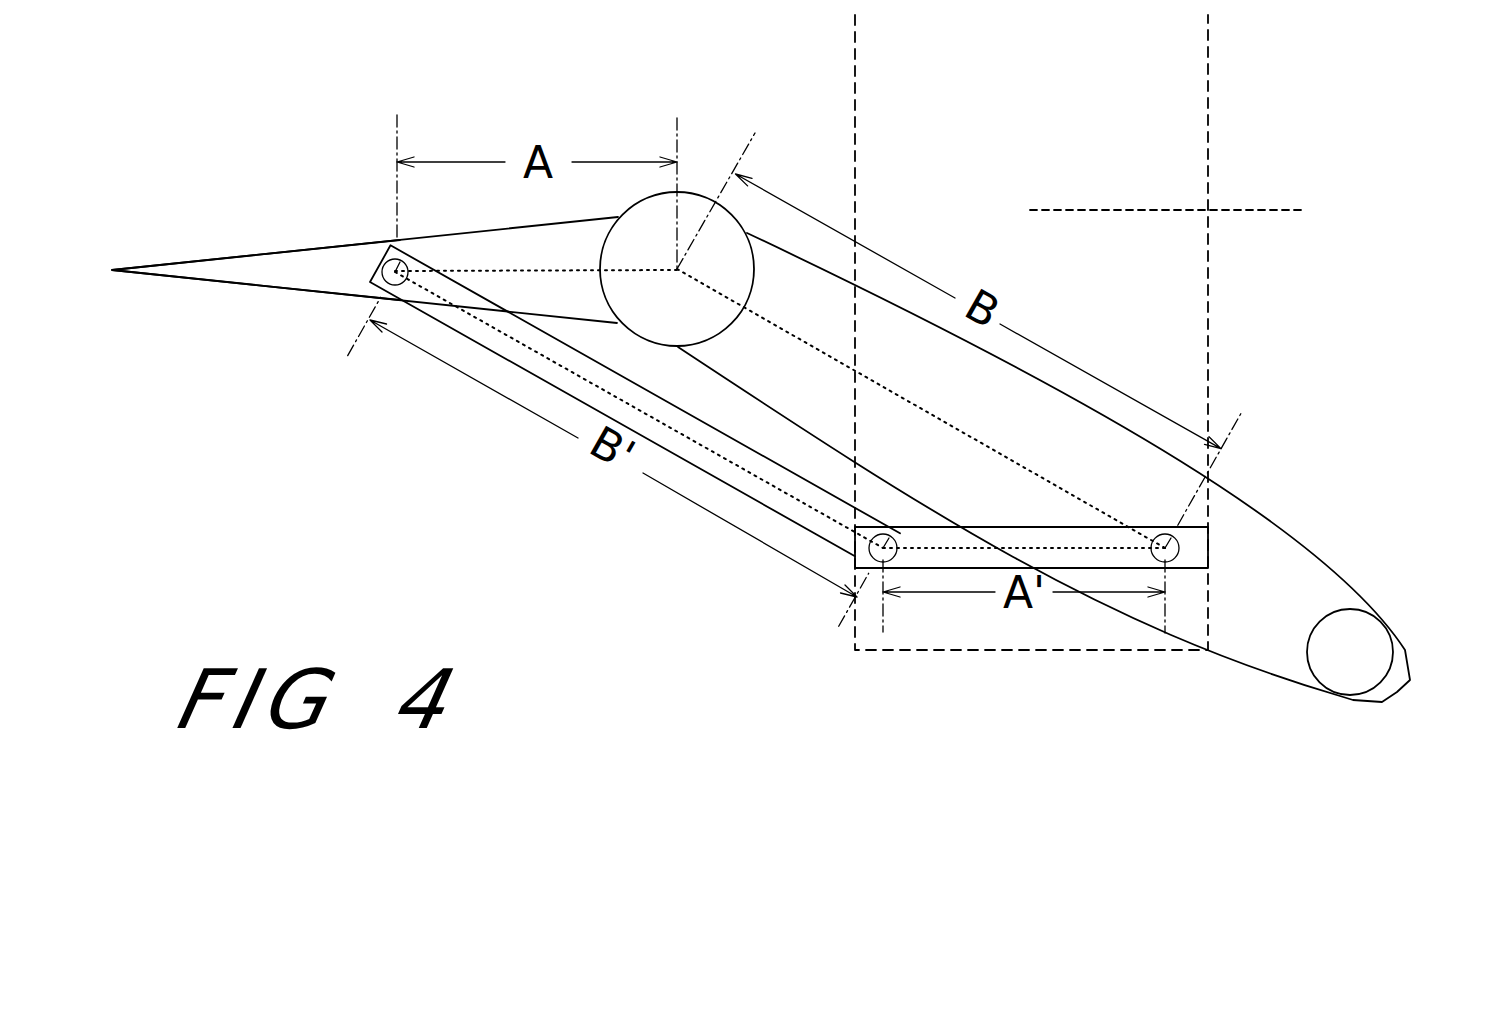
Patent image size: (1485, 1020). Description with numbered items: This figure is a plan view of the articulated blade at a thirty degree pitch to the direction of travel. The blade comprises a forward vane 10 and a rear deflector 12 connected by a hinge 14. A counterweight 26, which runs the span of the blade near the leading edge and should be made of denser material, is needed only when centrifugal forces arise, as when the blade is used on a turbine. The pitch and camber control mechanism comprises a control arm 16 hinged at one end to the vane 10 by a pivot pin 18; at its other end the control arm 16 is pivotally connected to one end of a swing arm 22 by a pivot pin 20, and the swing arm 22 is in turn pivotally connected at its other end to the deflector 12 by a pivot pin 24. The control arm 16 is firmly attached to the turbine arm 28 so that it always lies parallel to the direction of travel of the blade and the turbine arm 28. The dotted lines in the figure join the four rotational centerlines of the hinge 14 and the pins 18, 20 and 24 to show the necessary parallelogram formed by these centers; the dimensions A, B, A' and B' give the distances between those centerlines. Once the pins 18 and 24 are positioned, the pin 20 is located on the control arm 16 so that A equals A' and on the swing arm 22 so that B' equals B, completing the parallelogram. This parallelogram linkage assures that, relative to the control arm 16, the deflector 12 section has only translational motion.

The vane 10 is at (1265, 617).
The deflector 12 is at (280, 272).
The hinge 14 is at (690, 208).
The control arm 16 is at (977, 560).
The pivot pin 18 is at (1180, 543).
The pivot pin 20 is at (870, 551).
The swing arm 22 is at (543, 368).
The pivot pin 24 is at (383, 262).
The counterweight 26 is at (1352, 643).
The turbine arm 28 is at (1192, 212).